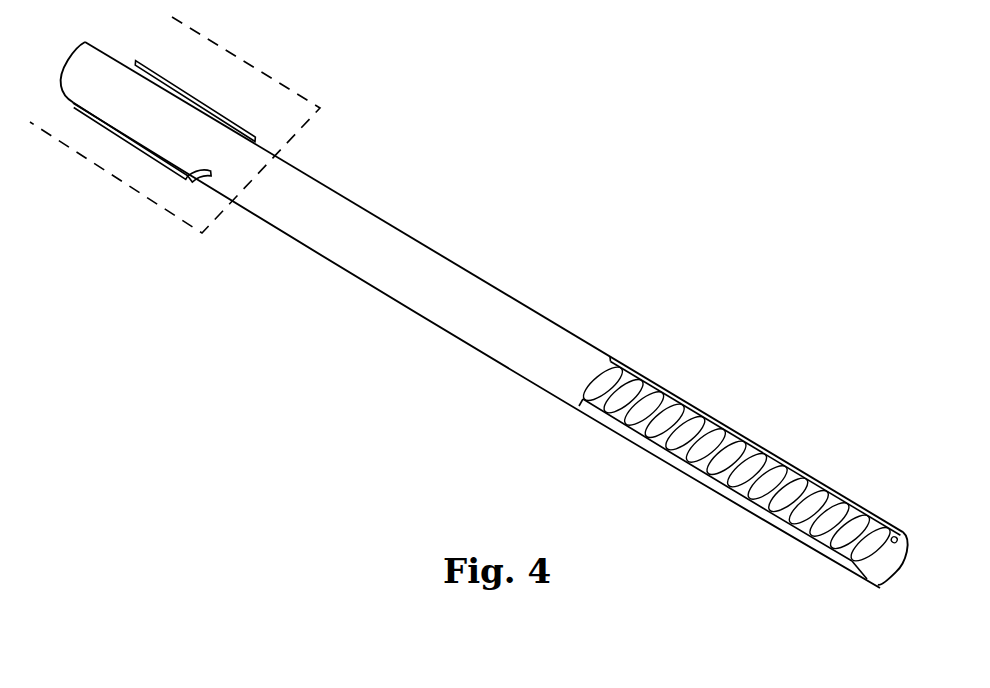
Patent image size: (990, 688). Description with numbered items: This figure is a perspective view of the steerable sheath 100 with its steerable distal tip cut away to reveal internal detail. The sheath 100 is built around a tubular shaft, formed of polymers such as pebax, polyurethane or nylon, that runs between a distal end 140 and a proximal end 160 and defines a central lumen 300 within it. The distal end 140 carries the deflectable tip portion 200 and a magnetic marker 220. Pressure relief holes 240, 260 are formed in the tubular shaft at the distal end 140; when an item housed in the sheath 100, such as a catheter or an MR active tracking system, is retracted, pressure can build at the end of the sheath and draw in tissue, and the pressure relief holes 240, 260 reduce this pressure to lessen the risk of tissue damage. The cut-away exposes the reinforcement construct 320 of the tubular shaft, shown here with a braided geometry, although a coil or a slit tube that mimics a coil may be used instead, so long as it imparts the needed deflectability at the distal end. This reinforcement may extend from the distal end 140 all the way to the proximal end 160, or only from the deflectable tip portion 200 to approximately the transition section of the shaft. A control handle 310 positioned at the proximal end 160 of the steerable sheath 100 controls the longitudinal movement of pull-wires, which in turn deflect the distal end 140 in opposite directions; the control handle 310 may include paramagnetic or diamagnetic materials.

The steerable sheath 100 is at (501, 313).
The distal end 140 is at (418, 237).
The proximal end 160 is at (200, 100).
The deflectable tip portion 200 is at (755, 443).
The magnetic marker 220 is at (807, 548).
The pressure relief hole 240 is at (898, 540).
The pressure relief hole 260 is at (853, 570).
The central lumen 300 is at (883, 563).
The control handle 310 is at (135, 188).
The reinforcement construct 320 is at (700, 417).